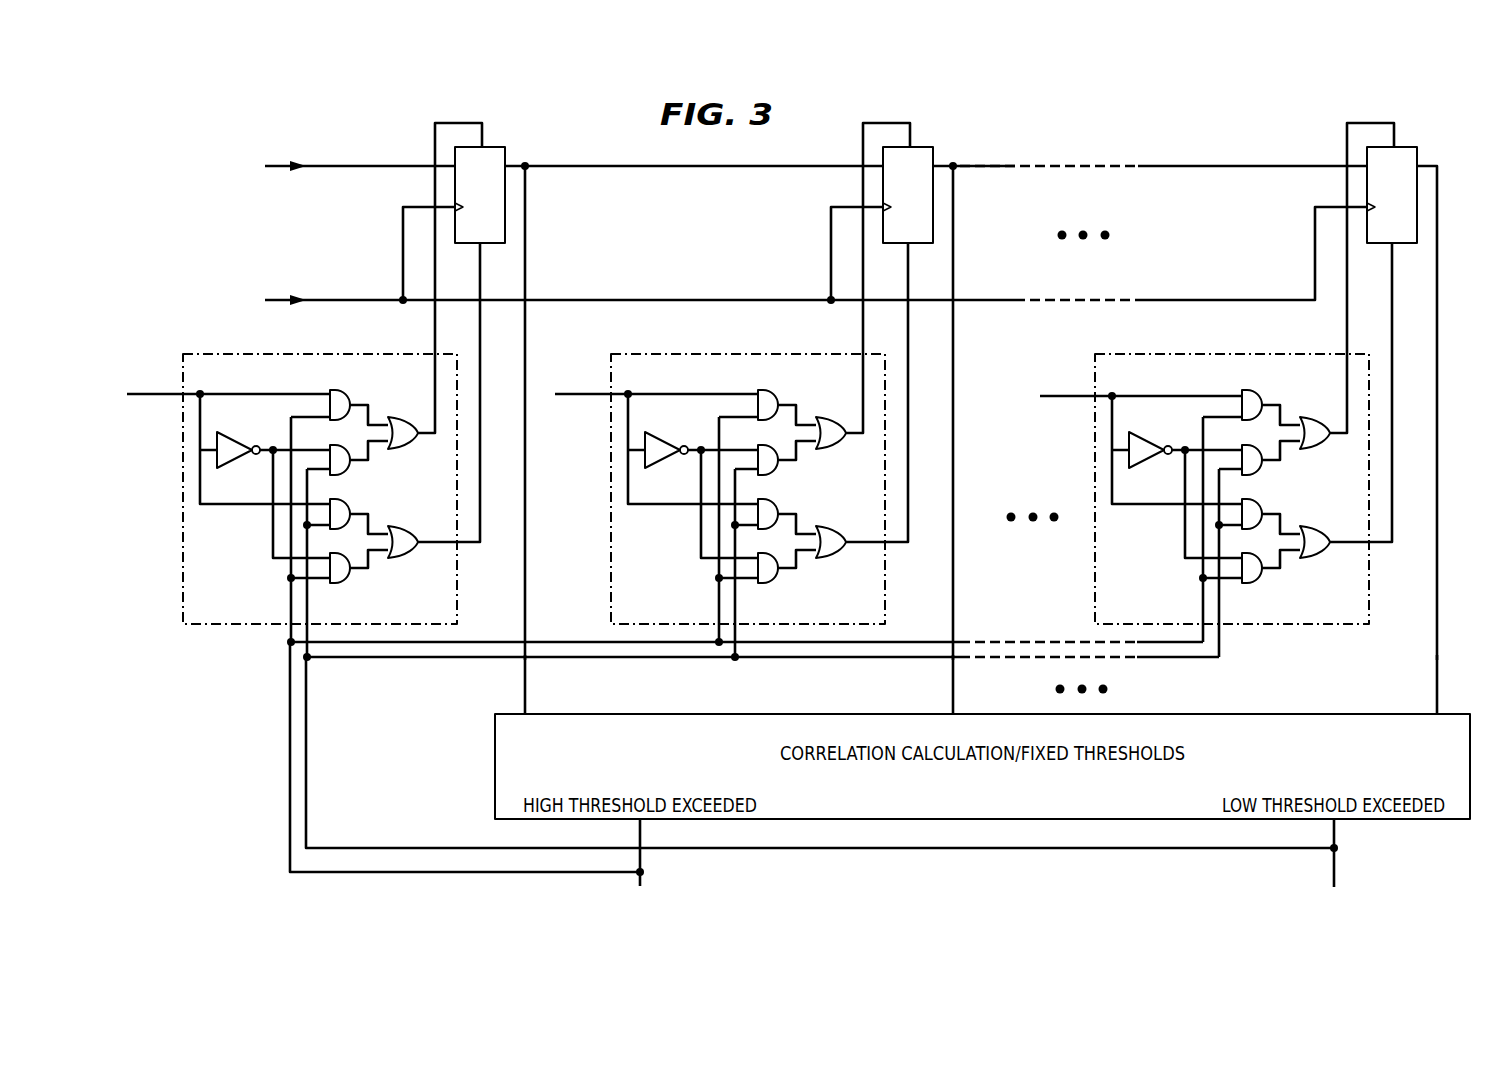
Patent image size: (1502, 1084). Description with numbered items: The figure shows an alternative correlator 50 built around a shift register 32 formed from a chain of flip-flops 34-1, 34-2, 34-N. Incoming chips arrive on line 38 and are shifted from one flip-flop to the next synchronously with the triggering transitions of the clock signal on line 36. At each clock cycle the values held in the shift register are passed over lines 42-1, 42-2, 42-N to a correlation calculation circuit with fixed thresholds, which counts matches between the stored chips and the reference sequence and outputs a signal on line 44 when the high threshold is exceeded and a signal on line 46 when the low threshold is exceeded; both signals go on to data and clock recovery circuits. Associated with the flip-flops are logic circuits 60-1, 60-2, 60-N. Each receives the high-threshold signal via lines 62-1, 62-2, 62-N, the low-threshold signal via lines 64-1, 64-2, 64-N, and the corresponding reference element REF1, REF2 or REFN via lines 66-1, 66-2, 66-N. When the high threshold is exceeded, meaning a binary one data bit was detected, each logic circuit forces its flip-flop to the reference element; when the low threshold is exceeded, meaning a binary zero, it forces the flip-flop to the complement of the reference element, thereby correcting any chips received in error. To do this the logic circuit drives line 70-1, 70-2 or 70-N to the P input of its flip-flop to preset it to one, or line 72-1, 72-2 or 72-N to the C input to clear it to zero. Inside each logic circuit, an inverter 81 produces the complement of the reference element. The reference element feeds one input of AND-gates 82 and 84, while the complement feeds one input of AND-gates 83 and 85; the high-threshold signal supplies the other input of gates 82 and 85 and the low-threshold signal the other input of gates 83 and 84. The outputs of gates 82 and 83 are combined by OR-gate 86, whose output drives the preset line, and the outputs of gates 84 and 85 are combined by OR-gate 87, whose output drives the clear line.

The shift register 32 is at (1068, 152).
The flip-flop 34-1 is at (498, 147).
The flip-flop 34-2 is at (926, 147).
The flip-flop 34-N is at (1410, 147).
The clock signal line 36 is at (352, 300).
The chip input line 38 is at (374, 166).
The shift register output line 42-1 is at (525, 699).
The shift register output line 42-2 is at (953, 699).
The shift register output line 42-N is at (1437, 699).
The high threshold exceeded output line 44 is at (643, 880).
The low threshold exceeded output line 46 is at (1336, 866).
The correlator 50 is at (208, 780).
The logic circuit 60-1 is at (242, 617).
The logic circuit 60-2 is at (669, 617).
The logic circuit 60-N is at (1154, 619).
The high threshold signal line 62-1 is at (290, 599).
The high threshold signal line 62-2 is at (718, 599).
The high threshold signal line 62-N is at (1202, 603).
The low threshold signal line 64-1 is at (308, 600).
The low threshold signal line 64-2 is at (736, 600).
The low threshold signal line 64-N is at (1220, 600).
The reference element line 66-1 is at (165, 397).
The reference element line 66-2 is at (592, 397).
The reference element line 66-N is at (1075, 399).
The preset line 70-1 is at (435, 326).
The preset line 70-2 is at (863, 326).
The preset line 70-N is at (1347, 326).
The clear line 72-1 is at (480, 328).
The clear line 72-2 is at (908, 328).
The clear line 72-N is at (1393, 330).
The inverter 81 is at (228, 446).
The AND-gate 82 is at (338, 389).
The AND-gate 83 is at (345, 474).
The AND-gate 84 is at (345, 498).
The AND-gate 85 is at (345, 582).
The OR-gate 86 is at (410, 448).
The OR-gate 87 is at (410, 530).